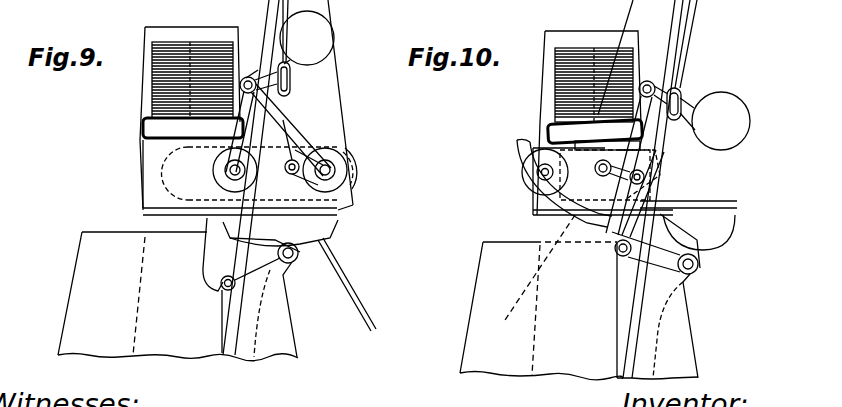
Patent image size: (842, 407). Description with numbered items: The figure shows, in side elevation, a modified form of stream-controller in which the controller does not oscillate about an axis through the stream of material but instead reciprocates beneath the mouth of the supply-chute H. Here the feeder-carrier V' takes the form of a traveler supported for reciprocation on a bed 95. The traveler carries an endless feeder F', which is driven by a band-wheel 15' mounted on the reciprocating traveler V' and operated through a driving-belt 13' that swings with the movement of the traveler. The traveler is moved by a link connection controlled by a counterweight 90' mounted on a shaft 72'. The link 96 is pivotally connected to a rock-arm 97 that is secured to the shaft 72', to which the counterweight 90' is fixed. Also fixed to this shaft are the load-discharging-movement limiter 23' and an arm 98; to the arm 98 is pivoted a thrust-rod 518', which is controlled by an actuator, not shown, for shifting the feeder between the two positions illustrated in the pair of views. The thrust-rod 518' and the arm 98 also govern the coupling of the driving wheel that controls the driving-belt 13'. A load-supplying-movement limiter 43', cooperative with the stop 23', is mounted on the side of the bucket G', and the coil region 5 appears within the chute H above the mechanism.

In FIG. 9, the supply-chute H is at (178, 33).
In FIG. 10, the supply-chute H is at (571, 36).
In FIG. 9, the coil / bobbin 5 is at (190, 62).
In FIG. 10, the coil / bobbin 5 is at (578, 60).
In FIG. 9, the shaft 72' is at (257, 123).
In FIG. 10, the shaft 72' is at (638, 136).
In FIG. 9, the arm 98 is at (279, 72).
In FIG. 10, the arm 98 is at (682, 92).
In FIG. 9, the counterweight 90' is at (307, 38).
In FIG. 10, the counterweight 90' is at (721, 121).
In FIG. 10, the driving-belt 13' is at (701, 44).
In FIG. 9, the rock-arm 97 is at (283, 145).
In FIG. 10, the rock-arm 97 is at (652, 158).
In FIG. 9, the link 96 is at (325, 150).
In FIG. 10, the link 96 is at (617, 173).
In FIG. 9, the band-wheel 15' is at (364, 168).
In FIG. 10, the band-wheel 15' is at (643, 181).
In FIG. 9, the load-discharging-movement limiter 23' is at (251, 180).
In FIG. 10, the load-discharging-movement limiter 23' is at (558, 168).
In FIG. 9, the feeder-carrier V' is at (253, 177).
In FIG. 10, the feeder-carrier V' is at (588, 181).
In FIG. 9, the endless feeder F' is at (299, 275).
In FIG. 10, the endless feeder F' is at (531, 172).
In FIG. 9, the bed 95 is at (185, 216).
In FIG. 10, the bed 95 is at (721, 204).
In FIG. 9, the load-supplying-movement limiter 43' is at (197, 259).
In FIG. 10, the load-supplying-movement limiter 43' is at (637, 243).
In FIG. 9, the thrust-rod 518' is at (259, 309).
In FIG. 10, the thrust-rod 518' is at (671, 311).
In FIG. 9, the bucket G' is at (178, 296).
In FIG. 10, the bucket G' is at (541, 311).